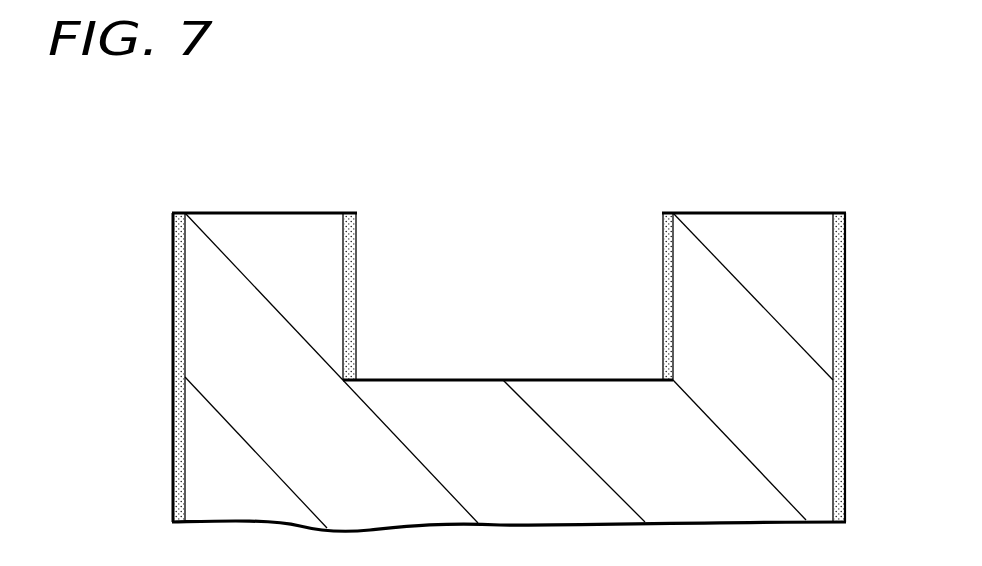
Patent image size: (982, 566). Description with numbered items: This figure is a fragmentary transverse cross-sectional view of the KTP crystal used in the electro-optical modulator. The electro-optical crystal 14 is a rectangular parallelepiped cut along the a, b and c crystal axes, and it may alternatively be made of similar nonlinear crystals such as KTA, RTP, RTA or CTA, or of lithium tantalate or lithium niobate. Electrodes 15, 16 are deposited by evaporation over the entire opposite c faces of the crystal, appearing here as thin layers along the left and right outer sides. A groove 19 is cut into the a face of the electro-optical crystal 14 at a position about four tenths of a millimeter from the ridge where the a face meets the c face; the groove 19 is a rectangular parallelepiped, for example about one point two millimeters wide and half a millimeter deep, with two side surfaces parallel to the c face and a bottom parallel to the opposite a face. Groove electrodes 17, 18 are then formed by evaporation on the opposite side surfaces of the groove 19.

The electro-optical crystal 14 is at (724, 235).
The electrode 15 is at (847, 248).
The electrode 16 is at (173, 234).
The groove electrode 17 is at (665, 287).
The groove electrode 18 is at (355, 272).
The groove 19 is at (518, 250).